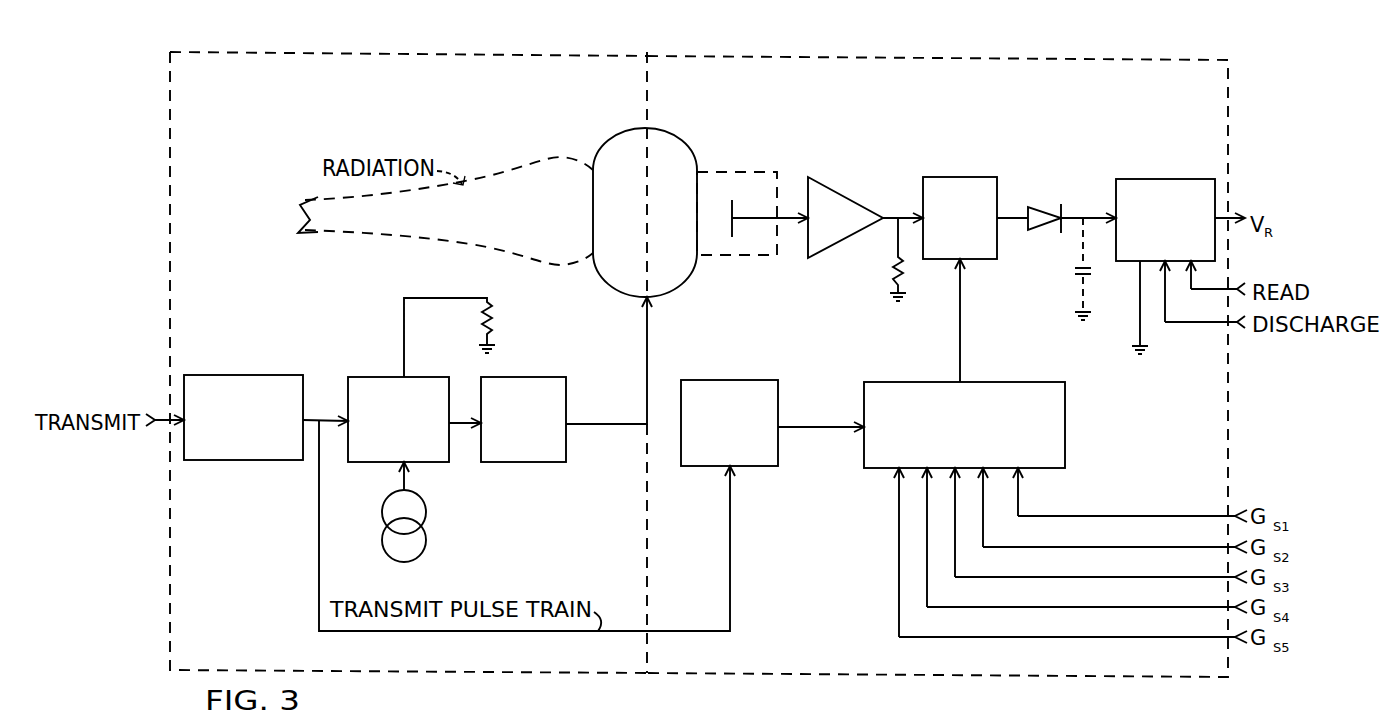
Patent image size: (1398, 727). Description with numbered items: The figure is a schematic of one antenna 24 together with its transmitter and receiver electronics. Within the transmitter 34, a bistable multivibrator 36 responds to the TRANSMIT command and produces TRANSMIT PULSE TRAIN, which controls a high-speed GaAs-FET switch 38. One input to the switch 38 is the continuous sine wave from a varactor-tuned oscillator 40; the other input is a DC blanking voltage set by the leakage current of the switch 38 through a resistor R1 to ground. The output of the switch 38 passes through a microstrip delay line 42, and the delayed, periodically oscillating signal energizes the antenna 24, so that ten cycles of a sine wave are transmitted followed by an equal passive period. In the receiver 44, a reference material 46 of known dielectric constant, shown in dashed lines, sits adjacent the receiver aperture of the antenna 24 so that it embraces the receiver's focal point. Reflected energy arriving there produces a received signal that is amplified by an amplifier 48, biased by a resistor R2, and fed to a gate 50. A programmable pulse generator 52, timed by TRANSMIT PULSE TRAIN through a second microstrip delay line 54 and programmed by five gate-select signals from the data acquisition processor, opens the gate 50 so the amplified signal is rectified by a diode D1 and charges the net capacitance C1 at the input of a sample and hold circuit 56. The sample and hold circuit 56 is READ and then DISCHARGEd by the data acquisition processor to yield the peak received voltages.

The antenna 24 is at (672, 142).
The transmitter 34 is at (265, 52).
The bistable multivibrator 36 is at (258, 375).
The switch 38 is at (378, 377).
The varactor-tuned oscillator 40 is at (425, 512).
The microstrip delay line 42 is at (530, 377).
The receiver 44 is at (1125, 60).
The reference material 46 is at (742, 172).
The amplifier 48 is at (845, 231).
The gate 50 is at (973, 177).
The programmable pulse generator 52 is at (1040, 382).
The second microstrip delay line 54 is at (760, 380).
The sample and hold circuit 56 is at (1166, 179).
The resistor R1 is at (482, 332).
The resistor R2 is at (895, 284).
The diode D1 is at (1038, 207).
The net capacitance C1 is at (1078, 276).